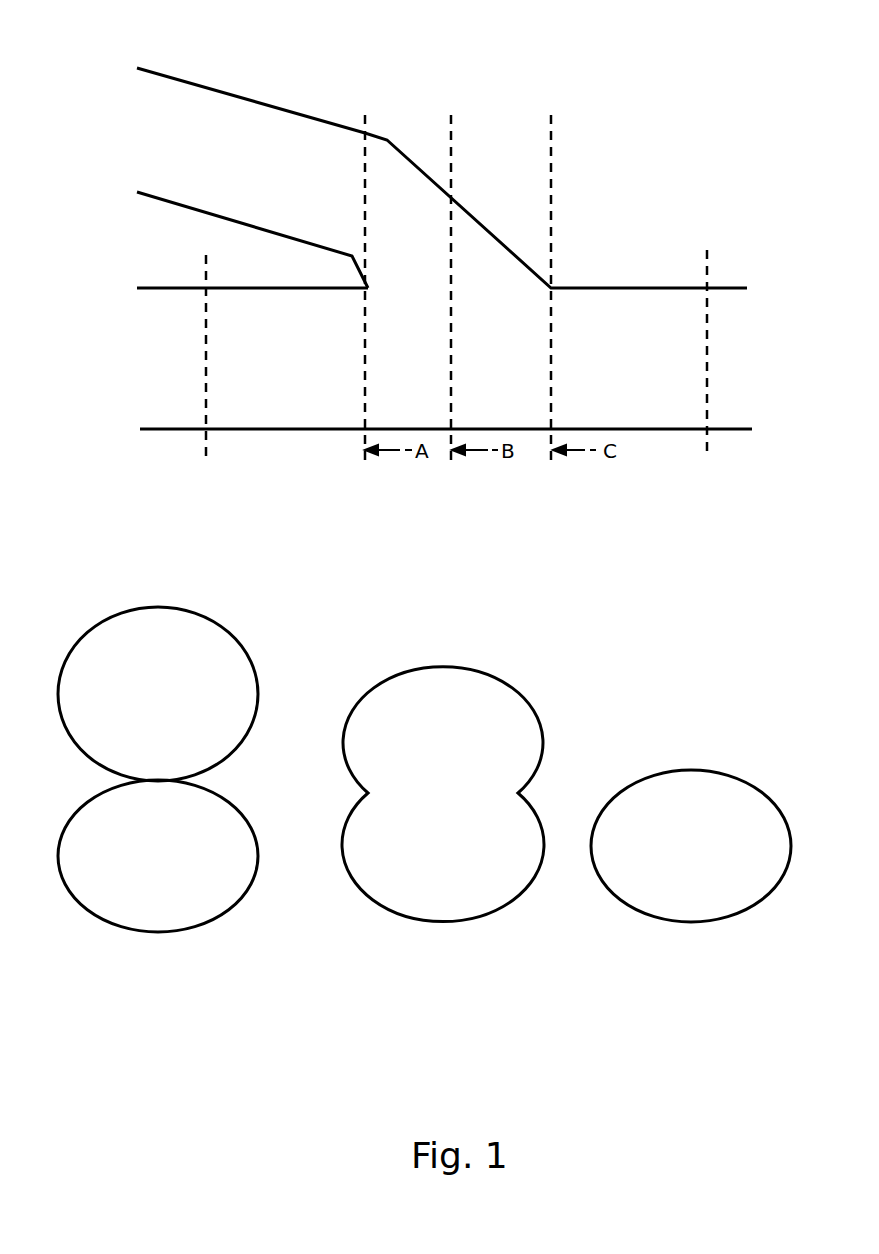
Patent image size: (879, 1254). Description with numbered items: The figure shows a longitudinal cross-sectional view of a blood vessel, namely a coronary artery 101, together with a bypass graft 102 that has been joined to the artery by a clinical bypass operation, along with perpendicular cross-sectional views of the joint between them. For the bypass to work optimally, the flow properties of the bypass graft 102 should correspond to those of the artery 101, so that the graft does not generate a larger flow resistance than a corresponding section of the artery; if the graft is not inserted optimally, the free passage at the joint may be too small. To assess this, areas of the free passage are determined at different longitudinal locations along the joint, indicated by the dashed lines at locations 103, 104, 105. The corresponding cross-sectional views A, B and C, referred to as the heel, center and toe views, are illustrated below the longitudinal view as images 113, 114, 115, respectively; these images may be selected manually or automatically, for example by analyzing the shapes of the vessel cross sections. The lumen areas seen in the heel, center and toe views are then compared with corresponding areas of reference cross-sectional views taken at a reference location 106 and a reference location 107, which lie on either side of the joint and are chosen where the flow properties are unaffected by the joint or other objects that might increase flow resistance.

The coronary artery 101 is at (145, 357).
The bypass graft 102 is at (137, 102).
The longitudinal location 103 is at (556, 114).
The longitudinal location 104 is at (457, 114).
The longitudinal location 105 is at (372, 114).
The reference location 106 is at (711, 260).
The reference location 107 is at (200, 262).
The heel view image 113 is at (693, 753).
The center view image 114 is at (475, 658).
The toe view image 115 is at (217, 615).